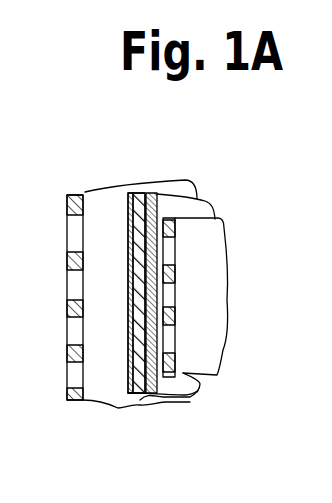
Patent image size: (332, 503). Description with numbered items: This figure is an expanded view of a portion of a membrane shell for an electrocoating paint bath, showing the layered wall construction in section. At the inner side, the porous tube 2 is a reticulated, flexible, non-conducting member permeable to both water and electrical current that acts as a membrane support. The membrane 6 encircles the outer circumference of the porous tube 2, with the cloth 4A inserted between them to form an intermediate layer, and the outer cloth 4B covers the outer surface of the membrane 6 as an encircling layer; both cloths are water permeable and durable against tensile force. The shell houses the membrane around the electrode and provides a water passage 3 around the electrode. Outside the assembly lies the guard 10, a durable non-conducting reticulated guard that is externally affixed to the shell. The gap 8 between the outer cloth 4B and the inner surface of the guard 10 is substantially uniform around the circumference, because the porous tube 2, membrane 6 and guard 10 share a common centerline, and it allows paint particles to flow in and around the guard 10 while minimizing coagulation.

The guard 10 is at (74, 192).
The outer cloth 4B is at (134, 193).
The cloth 4A is at (152, 193).
The porous tube 2 is at (177, 213).
The water passage 3 is at (227, 240).
The membrane 6 is at (150, 398).
The gap 8 is at (116, 408).